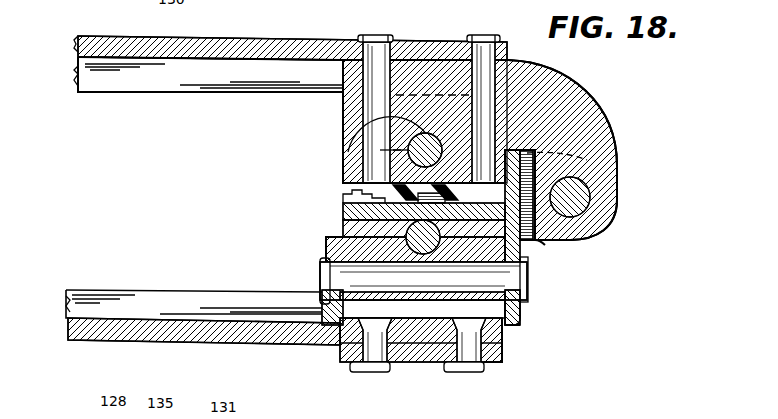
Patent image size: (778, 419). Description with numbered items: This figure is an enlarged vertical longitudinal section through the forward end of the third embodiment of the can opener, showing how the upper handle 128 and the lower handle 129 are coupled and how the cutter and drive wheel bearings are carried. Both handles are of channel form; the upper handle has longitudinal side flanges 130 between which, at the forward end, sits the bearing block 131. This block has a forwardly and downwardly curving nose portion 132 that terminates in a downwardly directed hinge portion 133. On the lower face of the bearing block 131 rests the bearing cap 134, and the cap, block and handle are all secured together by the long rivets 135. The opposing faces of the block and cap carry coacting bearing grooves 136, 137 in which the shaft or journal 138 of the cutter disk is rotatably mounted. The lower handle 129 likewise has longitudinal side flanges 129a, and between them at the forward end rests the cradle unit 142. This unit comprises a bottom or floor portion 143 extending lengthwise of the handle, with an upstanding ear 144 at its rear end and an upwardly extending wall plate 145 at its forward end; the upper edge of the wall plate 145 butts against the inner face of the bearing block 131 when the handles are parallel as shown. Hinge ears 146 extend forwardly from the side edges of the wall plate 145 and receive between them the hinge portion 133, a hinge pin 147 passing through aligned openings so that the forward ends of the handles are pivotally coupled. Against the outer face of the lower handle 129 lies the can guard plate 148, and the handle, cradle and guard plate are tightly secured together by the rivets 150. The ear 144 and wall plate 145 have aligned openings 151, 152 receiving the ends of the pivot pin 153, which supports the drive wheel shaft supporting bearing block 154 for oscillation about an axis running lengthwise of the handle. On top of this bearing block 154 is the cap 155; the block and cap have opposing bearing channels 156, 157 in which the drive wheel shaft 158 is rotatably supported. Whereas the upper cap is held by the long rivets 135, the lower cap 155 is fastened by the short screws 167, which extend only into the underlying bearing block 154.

The upper handle 128 is at (275, 36).
The lower handle 129 is at (64, 325).
The longitudinal side flanges of lower handle 129a is at (170, 300).
The longitudinal side flanges of upper handle 130 is at (250, 84).
The bearing block 131 is at (422, 58).
The nose portion 132 is at (583, 110).
The hinge portion 133 is at (612, 181).
The bearing cap 134 is at (343, 166).
The long rivets 135 is at (362, 36).
The bearing groove 136 is at (393, 118).
The bearing groove 137 is at (385, 150).
The shaft or journal of cutter disk 138 is at (412, 140).
The cradle unit 142 is at (528, 322).
The bottom or floor portion 143 is at (412, 368).
The upstanding ear 144 is at (326, 250).
The wall plate 145 is at (527, 255).
The hinge ears 146 is at (530, 245).
The hinge pin 147 is at (585, 178).
The can guard plate 148 is at (500, 360).
The rivets 150 is at (368, 373).
The opening in ear 151 is at (320, 340).
The opening in wall plate 152 is at (524, 310).
The pivot pin 153 is at (335, 272).
The drive wheel shaft supporting bearing block 154 is at (530, 238).
The cap 155 is at (343, 205).
The bearing channel 156 is at (343, 243).
The bearing channel 157 is at (343, 212).
The drive wheel shaft 158 is at (343, 226).
The short screws 167 is at (345, 190).